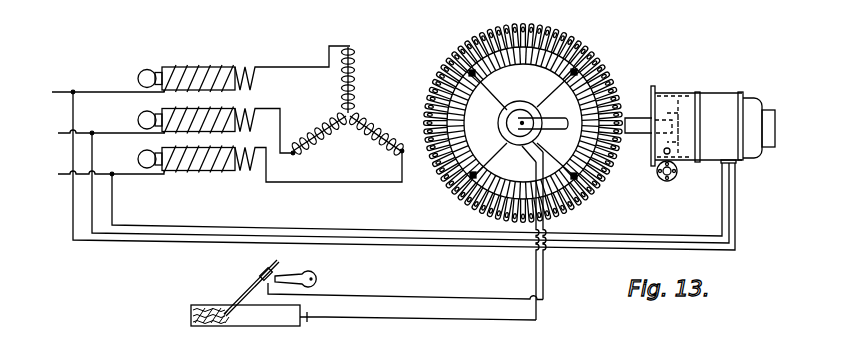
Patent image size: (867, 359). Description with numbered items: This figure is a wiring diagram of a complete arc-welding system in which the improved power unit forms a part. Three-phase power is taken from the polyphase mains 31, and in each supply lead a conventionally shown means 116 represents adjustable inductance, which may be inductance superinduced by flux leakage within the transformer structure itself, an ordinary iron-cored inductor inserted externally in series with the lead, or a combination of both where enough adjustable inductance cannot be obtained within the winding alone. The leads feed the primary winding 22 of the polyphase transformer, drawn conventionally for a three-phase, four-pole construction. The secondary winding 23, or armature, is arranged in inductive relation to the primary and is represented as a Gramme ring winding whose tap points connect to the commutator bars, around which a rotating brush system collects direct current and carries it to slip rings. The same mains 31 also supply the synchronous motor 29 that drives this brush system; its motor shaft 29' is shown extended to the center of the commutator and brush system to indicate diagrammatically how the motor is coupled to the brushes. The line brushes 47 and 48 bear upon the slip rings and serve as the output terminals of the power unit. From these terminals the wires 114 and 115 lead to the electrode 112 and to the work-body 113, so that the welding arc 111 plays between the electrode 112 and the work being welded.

The polyphase mains 31 is at (382, 167).
The adjustable inductance means 116 is at (252, 185).
The primary winding 22 is at (357, 81).
The secondary winding 23 is at (456, 51).
The line brush 47 is at (546, 165).
The line brush 48 is at (516, 158).
The motor shaft 29' is at (644, 97).
The synchronous motor 29 is at (713, 126).
The electrode 112 is at (258, 267).
The arc 111 is at (228, 311).
The work-body 113 is at (201, 327).
The wire 114 is at (546, 278).
The wire 115 is at (532, 278).